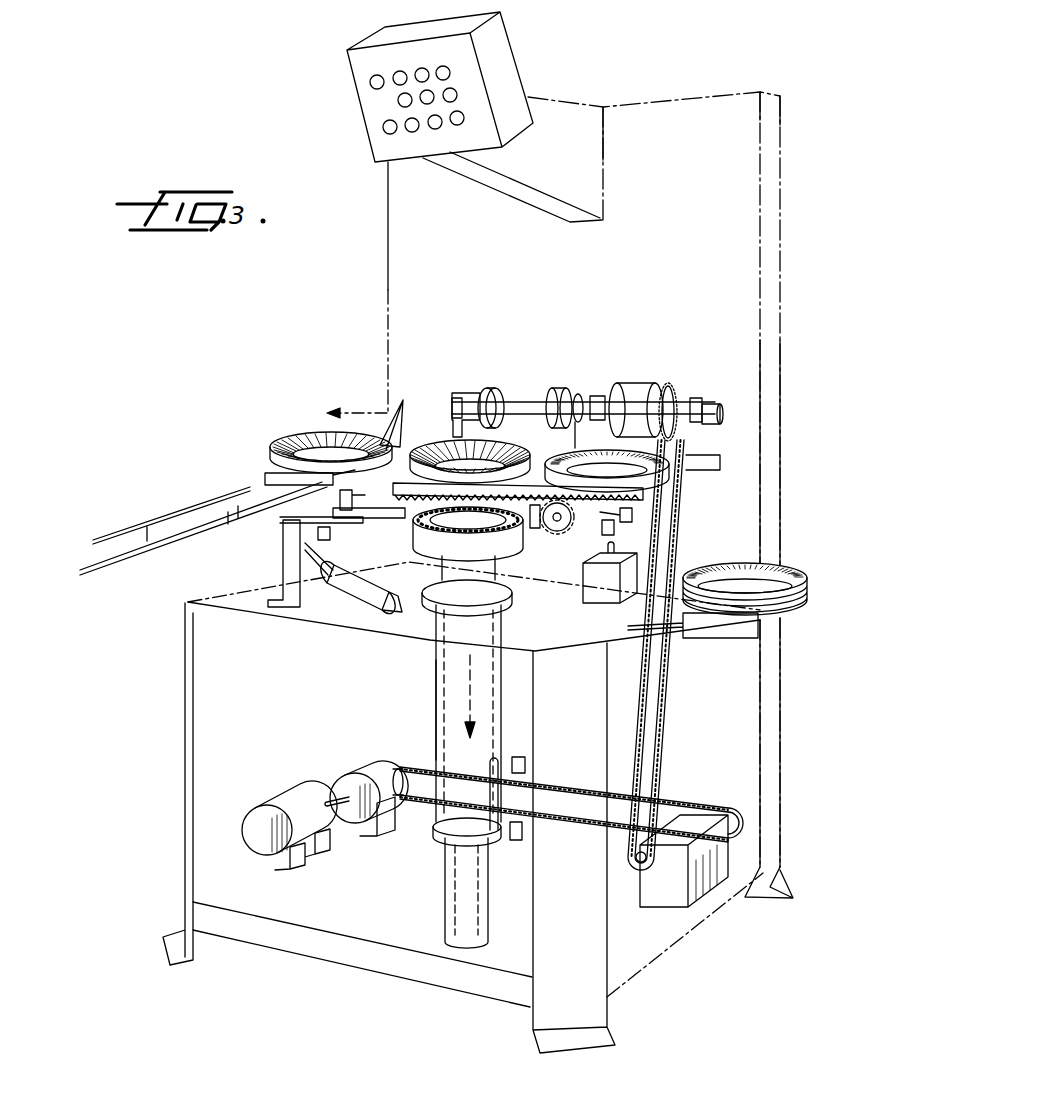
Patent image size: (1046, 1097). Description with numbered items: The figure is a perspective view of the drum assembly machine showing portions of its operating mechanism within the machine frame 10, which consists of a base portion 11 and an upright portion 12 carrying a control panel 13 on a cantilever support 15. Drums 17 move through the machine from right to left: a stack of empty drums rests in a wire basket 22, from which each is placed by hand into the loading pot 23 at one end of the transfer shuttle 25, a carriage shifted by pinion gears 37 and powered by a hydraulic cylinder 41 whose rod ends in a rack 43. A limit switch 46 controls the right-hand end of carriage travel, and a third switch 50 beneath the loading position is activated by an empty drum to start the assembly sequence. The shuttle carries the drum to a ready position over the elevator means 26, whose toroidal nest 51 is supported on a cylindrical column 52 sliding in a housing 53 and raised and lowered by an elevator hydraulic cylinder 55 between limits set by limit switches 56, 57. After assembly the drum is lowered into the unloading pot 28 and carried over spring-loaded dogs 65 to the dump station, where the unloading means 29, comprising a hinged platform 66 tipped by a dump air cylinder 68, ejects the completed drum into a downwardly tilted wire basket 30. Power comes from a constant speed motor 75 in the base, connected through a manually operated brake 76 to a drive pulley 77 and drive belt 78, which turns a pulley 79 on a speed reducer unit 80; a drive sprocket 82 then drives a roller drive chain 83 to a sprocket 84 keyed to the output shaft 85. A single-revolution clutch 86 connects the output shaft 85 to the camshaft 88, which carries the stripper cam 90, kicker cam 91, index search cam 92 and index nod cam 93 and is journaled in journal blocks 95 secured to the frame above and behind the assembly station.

The machine frame 10 is at (790, 731).
The base portion 11 is at (598, 965).
The upright portion 12 is at (774, 257).
The control panel 13 is at (347, 76).
The cantilever support 15 is at (590, 164).
The drum 17 is at (283, 438).
The wire rack or basket 22 is at (708, 645).
The loading pot 23 is at (700, 458).
The transfer shuttle 25 is at (262, 470).
The elevator means 26 is at (424, 846).
The unloading pot 28 is at (455, 468).
The unloading means 29 is at (275, 560).
The wire basket 30 is at (162, 520).
The pinion gear 37 is at (565, 527).
The hydraulic cylinder 41 is at (535, 528).
The rack 43 is at (634, 514).
The limit switch 46 is at (745, 573).
The third switch 50 is at (616, 528).
The nest 51 is at (442, 552).
The cylindrical column 52 is at (505, 580).
The housing 53 is at (434, 675).
The elevator hydraulic cylinder 55 is at (452, 890).
The limit switch 56 is at (524, 832).
The limit switch 57 is at (527, 762).
The spring-loaded dogs 65 is at (404, 445).
The hinged platform 66 is at (352, 526).
The dump air cylinder 68 is at (372, 596).
The constant speed motor 75 is at (272, 806).
The manually operated brake 76 is at (354, 775).
The drive pulley 77 is at (418, 770).
The drive belt 78 is at (690, 805).
The pulley 79 is at (753, 826).
The speed reducer unit 80 is at (675, 903).
The drive sprocket 82 is at (630, 868).
The roller drive chain 83 is at (660, 700).
The sprocket 84 is at (674, 395).
The output shaft 85 is at (722, 414).
The single-revolution clutch 86 is at (640, 385).
The camshaft 88 is at (530, 402).
The stripper cam 90 is at (580, 394).
The kicker cam 91 is at (555, 388).
The index search cam 92 is at (498, 388).
The index nod cam 93 is at (478, 393).
The journal blocks 95 is at (456, 398).